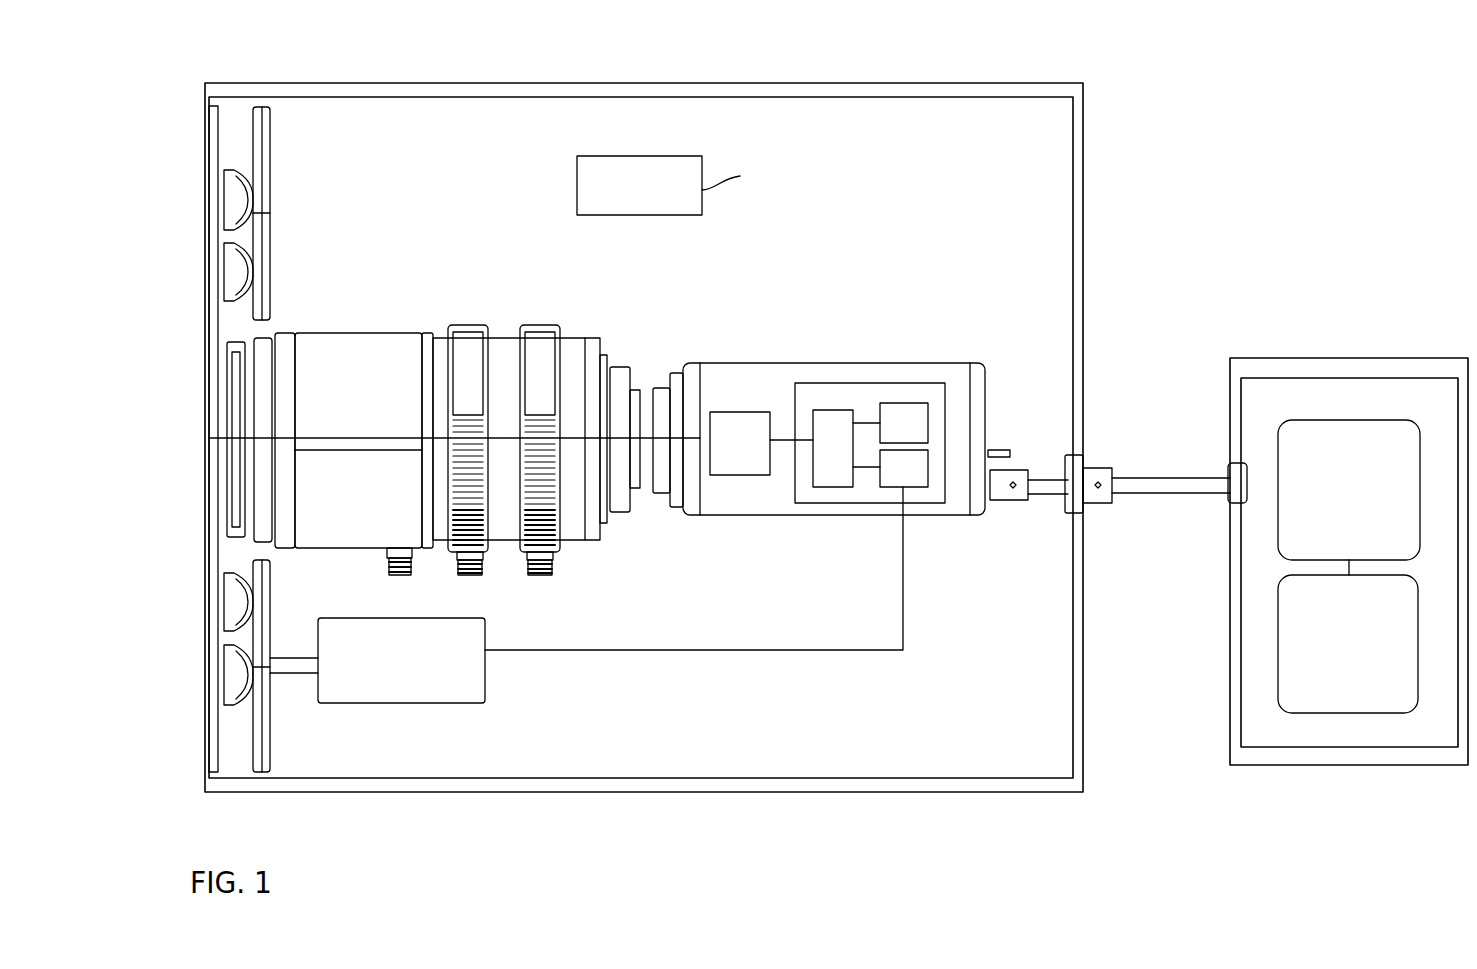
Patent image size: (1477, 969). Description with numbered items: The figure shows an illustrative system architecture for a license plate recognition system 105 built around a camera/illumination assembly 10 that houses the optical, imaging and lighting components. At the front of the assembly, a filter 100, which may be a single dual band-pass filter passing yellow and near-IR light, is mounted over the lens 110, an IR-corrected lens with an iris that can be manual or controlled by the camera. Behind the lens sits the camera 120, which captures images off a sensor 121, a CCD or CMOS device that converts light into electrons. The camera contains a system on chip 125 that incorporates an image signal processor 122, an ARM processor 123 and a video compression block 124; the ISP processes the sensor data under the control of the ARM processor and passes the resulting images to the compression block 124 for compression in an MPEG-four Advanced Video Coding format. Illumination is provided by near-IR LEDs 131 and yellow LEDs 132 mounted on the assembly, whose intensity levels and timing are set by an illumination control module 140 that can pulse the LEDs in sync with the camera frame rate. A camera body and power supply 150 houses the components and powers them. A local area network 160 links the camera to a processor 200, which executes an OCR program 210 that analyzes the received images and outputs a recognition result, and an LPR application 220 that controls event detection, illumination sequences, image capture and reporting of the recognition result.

The camera/illumination assembly 10 is at (596, 792).
The system 105 is at (1150, 132).
The filter 100 is at (228, 470).
The lens 110 is at (366, 332).
The camera 120 is at (870, 424).
The sensor 121 is at (730, 475).
The image signal processor 122 is at (835, 470).
The ARM processor 123 is at (912, 470).
The H.264 124 is at (905, 407).
The system on chip 125 is at (858, 384).
The near-IR LEDs 131 is at (224, 270).
The yellow LEDs 132 is at (223, 675).
The illumination control module 140 is at (400, 703).
The camera body and power supply 150 is at (815, 98).
The local area network 160 is at (1163, 482).
The processor 200 is at (1349, 600).
The OCR program 210 is at (1348, 644).
The LPR application 220 is at (1349, 490).